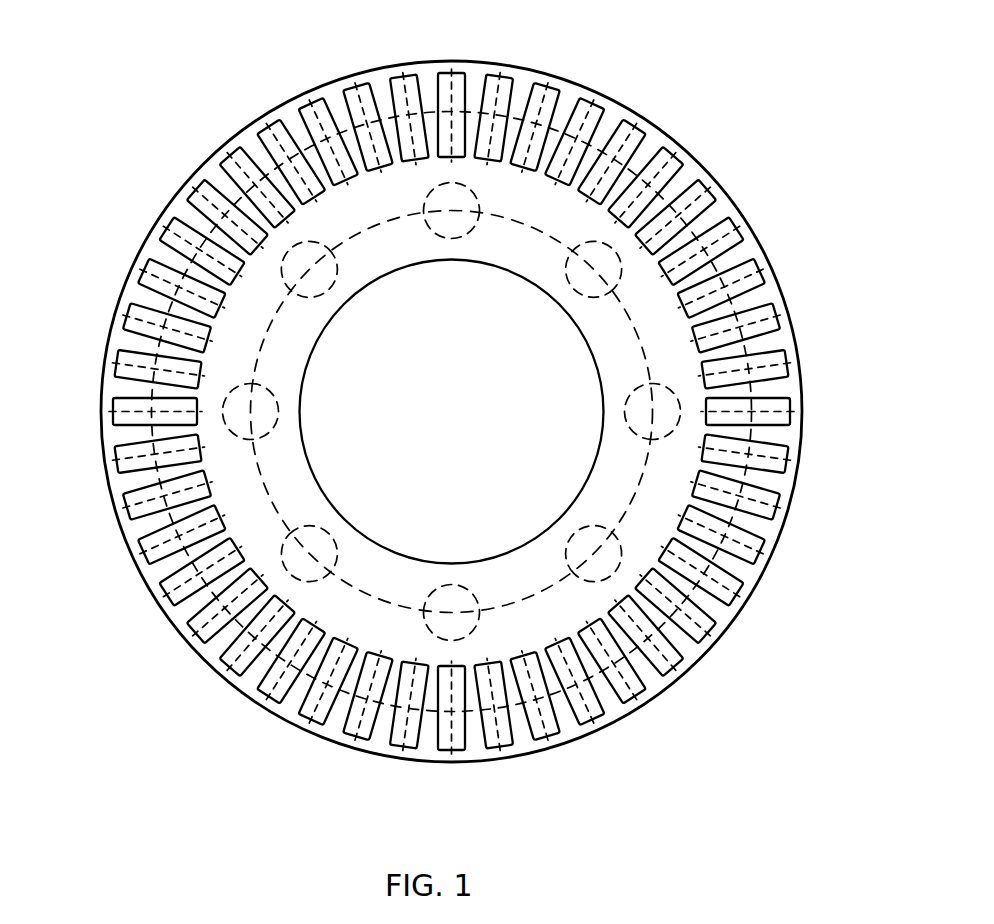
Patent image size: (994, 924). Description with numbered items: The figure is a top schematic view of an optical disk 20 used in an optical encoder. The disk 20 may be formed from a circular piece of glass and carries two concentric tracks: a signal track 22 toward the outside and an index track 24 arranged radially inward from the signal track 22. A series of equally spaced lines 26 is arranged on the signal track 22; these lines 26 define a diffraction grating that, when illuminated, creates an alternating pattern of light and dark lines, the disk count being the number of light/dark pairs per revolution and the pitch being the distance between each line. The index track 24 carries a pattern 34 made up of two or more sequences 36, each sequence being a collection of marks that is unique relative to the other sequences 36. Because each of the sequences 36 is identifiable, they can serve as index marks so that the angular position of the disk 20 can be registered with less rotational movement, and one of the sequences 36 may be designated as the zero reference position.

The optical disk 20 is at (778, 278).
The signal track 22 is at (283, 150).
The index track 24 is at (272, 510).
The lines 26 is at (143, 272).
The pattern 34 is at (535, 633).
The sequences 36 is at (597, 535).